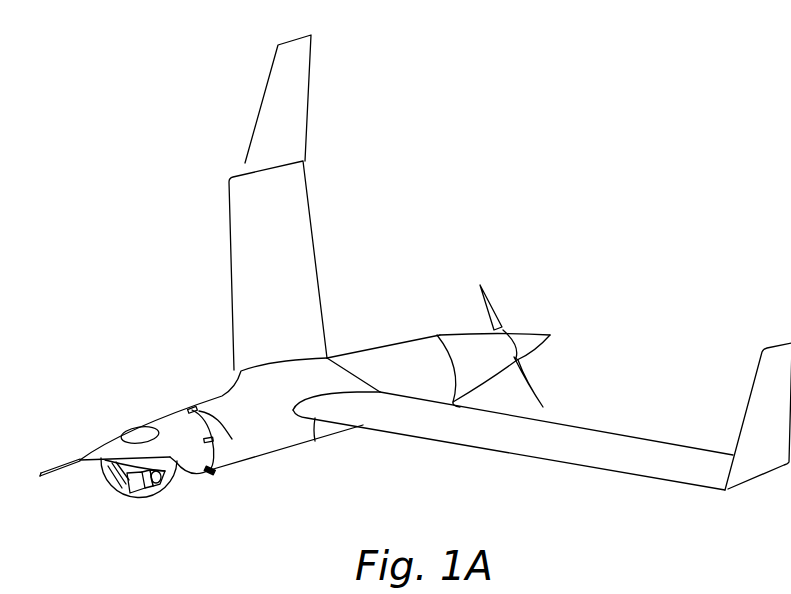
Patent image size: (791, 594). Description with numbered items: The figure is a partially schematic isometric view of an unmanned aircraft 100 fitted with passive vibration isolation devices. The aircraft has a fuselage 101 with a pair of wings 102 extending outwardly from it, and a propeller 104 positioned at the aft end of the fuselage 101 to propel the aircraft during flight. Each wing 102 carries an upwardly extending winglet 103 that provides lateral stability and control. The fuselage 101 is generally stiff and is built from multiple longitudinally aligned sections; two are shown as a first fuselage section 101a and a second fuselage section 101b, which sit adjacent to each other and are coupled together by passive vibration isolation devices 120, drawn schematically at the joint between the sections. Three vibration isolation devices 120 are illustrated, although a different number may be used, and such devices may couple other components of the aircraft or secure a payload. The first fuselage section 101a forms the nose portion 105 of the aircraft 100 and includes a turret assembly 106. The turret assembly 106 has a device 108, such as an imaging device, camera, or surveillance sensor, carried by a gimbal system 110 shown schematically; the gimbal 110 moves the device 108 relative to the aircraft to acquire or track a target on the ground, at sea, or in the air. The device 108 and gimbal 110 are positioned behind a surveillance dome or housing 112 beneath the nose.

The unmanned aircraft 100 is at (497, 112).
The fuselage 101 is at (344, 436).
The first fuselage section 101a is at (175, 412).
The second fuselage section 101b is at (212, 397).
The wing 102 is at (257, 240).
The winglet 103 is at (252, 101).
The propeller 104 is at (497, 305).
The nose portion 105 is at (98, 423).
The turret assembly 106 is at (100, 495).
The device 108 is at (122, 500).
The gimbal system 110 is at (172, 472).
The surveillance dome 112 is at (140, 498).
The passive vibration isolation device 120 is at (212, 436).